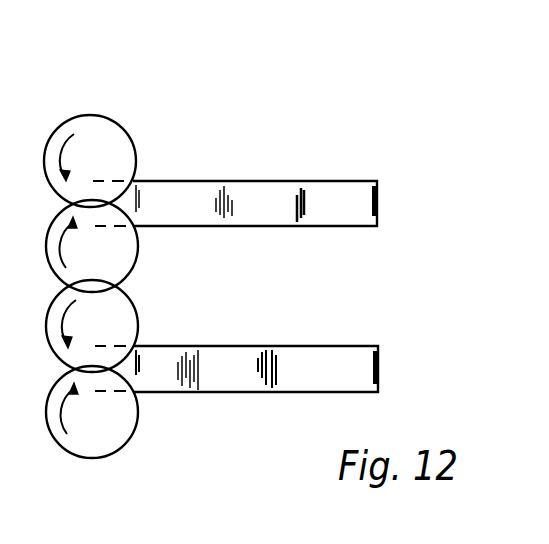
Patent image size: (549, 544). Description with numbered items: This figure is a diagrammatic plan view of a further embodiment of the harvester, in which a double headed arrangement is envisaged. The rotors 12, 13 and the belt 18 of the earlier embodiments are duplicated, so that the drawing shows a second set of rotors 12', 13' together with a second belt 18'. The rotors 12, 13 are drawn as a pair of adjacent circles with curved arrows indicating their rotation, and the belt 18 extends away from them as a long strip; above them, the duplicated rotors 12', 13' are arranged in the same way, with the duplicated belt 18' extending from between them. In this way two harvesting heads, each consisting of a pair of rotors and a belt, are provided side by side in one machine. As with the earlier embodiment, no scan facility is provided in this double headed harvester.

The rotor 12 is at (116, 414).
The rotor 13 is at (125, 326).
The belt 18 is at (256, 342).
The rotor 12' is at (125, 246).
The rotor 13' is at (120, 151).
The belt 18' is at (255, 172).